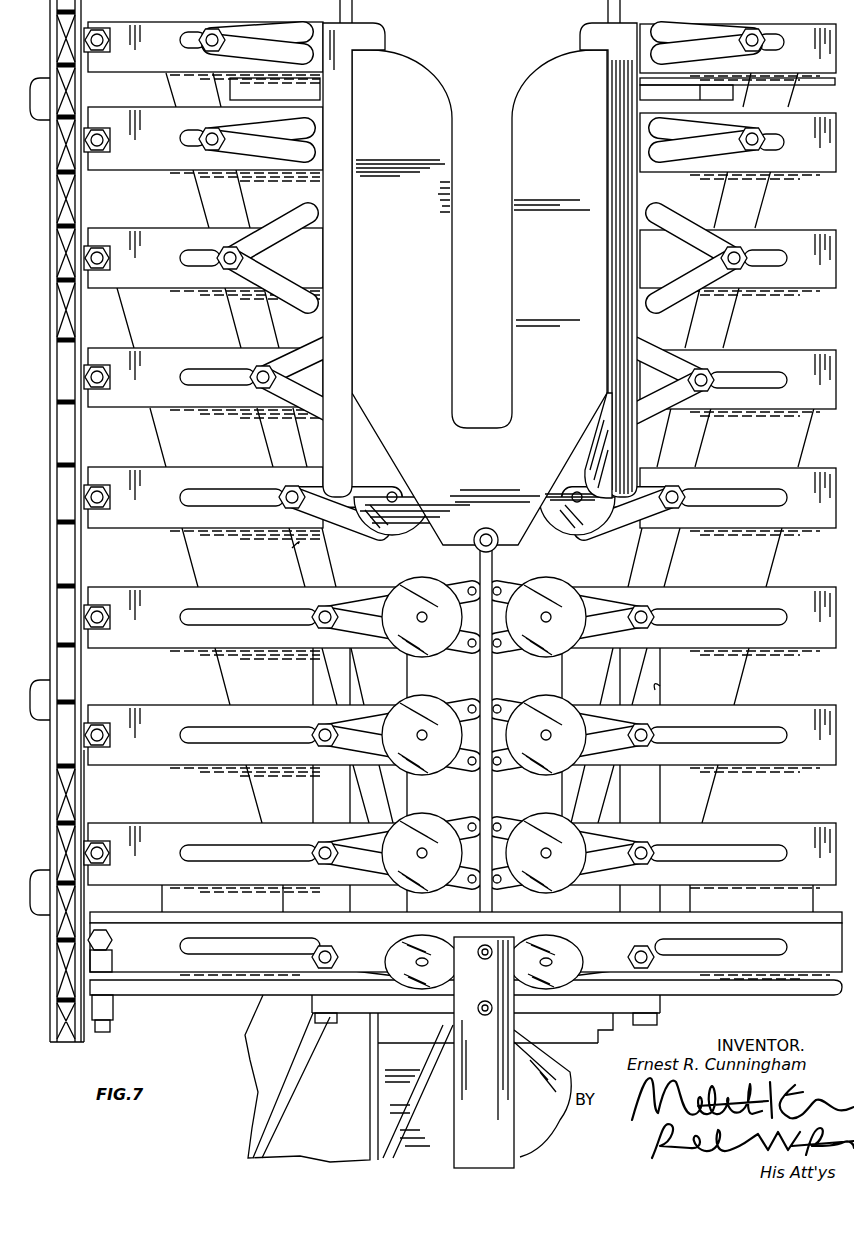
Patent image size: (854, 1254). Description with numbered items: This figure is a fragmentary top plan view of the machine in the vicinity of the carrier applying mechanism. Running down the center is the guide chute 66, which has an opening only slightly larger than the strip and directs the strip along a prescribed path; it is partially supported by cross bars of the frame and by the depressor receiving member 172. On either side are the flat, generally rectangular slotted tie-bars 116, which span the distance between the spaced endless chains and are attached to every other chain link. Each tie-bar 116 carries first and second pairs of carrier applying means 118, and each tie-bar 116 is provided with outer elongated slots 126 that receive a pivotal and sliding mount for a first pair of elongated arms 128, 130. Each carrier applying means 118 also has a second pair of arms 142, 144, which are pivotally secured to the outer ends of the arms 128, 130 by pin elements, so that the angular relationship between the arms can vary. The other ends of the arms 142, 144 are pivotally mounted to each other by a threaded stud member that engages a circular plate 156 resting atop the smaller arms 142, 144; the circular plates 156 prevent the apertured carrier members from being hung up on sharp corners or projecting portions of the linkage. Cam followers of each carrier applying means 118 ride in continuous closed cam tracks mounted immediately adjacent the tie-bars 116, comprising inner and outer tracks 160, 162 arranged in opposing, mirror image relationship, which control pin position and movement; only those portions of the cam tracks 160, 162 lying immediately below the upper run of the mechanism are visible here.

The guide chute 66 is at (430, 181).
The slotted tie-bar 116 is at (814, 124).
The outer elongated slot 126 is at (773, 135).
The elongated arm 128 is at (657, 128).
The elongated arm 130 is at (662, 153).
The second arm 142 is at (463, 590).
The second arm 144 is at (463, 647).
The circular plate 156 is at (409, 592).
The inner cam track 160 is at (578, 562).
The outer cam track 162 is at (293, 547).
The depressor receiving member 172 is at (488, 683).
The carrier applying means 118 is at (395, 818).